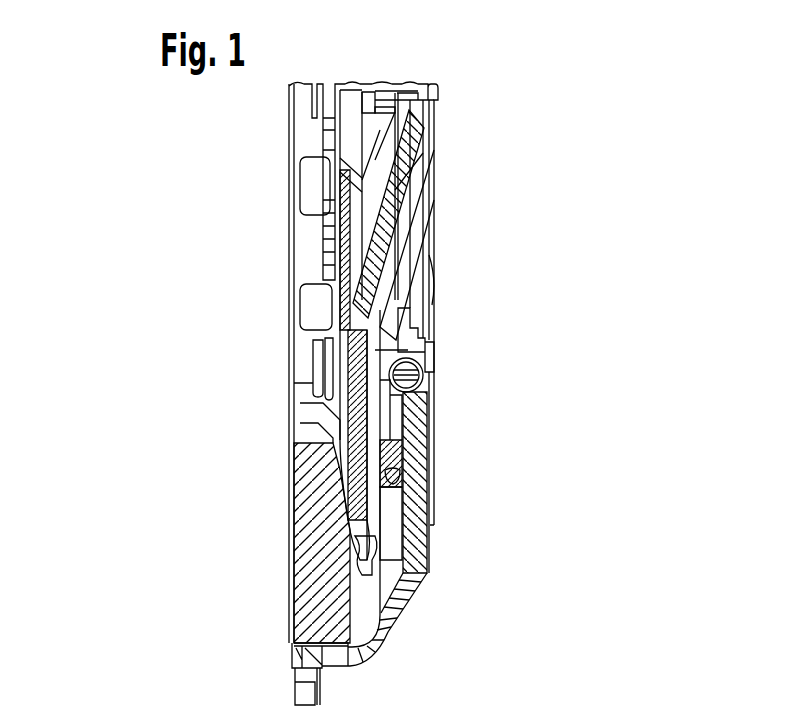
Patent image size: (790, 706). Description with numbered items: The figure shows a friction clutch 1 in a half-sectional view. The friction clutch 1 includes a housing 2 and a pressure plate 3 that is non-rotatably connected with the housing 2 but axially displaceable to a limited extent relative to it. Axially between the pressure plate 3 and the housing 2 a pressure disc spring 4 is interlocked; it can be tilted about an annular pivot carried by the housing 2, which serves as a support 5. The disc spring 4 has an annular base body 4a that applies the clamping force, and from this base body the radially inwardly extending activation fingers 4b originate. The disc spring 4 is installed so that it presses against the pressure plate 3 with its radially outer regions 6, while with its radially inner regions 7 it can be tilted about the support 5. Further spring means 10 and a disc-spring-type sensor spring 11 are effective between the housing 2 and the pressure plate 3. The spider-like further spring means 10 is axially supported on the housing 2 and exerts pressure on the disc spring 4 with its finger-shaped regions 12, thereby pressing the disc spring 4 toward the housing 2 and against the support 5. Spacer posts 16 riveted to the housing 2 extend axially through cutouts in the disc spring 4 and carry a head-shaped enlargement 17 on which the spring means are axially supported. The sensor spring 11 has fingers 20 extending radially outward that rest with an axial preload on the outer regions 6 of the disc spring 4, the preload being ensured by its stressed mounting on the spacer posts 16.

The friction clutch 1 is at (498, 73).
The housing 2 is at (415, 433).
The pressure plate 3 is at (305, 495).
The pressure disc spring 4 is at (400, 352).
The annular base body 4a is at (335, 523).
The activation fingers 4b is at (415, 232).
The support 5 is at (425, 476).
The radially outer regions 6 is at (362, 553).
The radially inner regions 7 is at (330, 470).
The further spring means 10 is at (302, 294).
The disc-spring-type sensor spring 11 is at (392, 527).
The finger-shaped regions 12 is at (340, 358).
The spacer posts 16 is at (320, 340).
The enlargement 17 is at (325, 378).
The fingers 20 is at (355, 543).